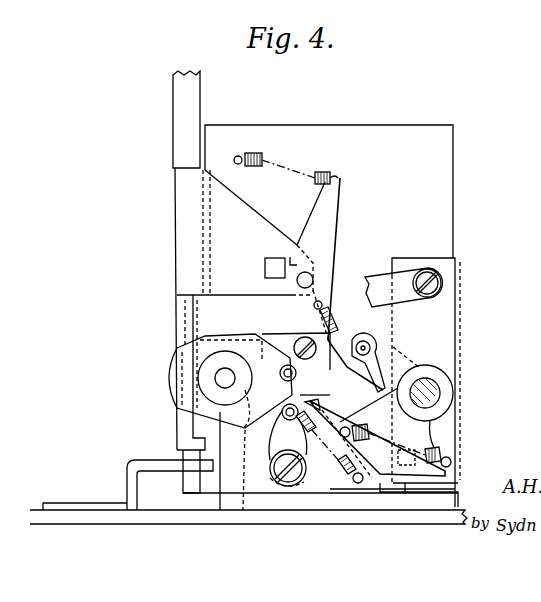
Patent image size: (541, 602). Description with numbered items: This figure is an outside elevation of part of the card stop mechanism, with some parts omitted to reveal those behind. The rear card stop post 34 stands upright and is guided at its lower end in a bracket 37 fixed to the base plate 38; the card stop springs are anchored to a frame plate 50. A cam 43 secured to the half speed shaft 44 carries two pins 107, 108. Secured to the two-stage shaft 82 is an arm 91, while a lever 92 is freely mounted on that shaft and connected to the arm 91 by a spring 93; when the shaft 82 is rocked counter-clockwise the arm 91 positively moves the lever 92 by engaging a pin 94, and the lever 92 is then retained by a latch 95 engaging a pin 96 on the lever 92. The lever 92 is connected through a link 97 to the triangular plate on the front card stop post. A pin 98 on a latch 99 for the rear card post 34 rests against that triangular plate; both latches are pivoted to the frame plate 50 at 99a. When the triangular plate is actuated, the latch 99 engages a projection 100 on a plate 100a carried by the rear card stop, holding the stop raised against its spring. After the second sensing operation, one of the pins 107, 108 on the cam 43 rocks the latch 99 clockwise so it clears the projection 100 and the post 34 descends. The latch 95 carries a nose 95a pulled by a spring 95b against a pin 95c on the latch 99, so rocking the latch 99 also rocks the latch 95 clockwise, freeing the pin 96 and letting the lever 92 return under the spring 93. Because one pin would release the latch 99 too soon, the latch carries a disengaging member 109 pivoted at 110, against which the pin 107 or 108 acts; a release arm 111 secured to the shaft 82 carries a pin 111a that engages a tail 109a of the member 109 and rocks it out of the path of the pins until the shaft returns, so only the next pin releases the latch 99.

The rear card stop post 34 is at (183, 135).
The bracket 37 is at (130, 464).
The base plate 38 is at (161, 512).
The cam 43 is at (172, 360).
The shaft 44 is at (222, 380).
The frame plate 50 is at (437, 138).
The two-stage shaft 82 is at (440, 393).
The arm 91 is at (437, 438).
The lever 92 is at (450, 309).
The spring 93 is at (373, 488).
The pin 94 is at (447, 473).
The latch 95 is at (425, 491).
The nose 95a is at (322, 410).
The spring 95b is at (328, 468).
The pin 95c is at (266, 422).
The pin 96 is at (405, 494).
The link 97 is at (388, 258).
The pin 98 is at (312, 269).
The latch 99 is at (333, 200).
The pivot 99a is at (292, 481).
The projection 100 is at (265, 262).
The plate 100a is at (250, 221).
The pin 107 is at (176, 343).
The pin 108 is at (235, 461).
The disengaging member 109 is at (265, 337).
The tail 109a is at (345, 340).
The pivot 110 is at (300, 339).
The release arm 111 is at (383, 356).
The pin 111a is at (371, 349).